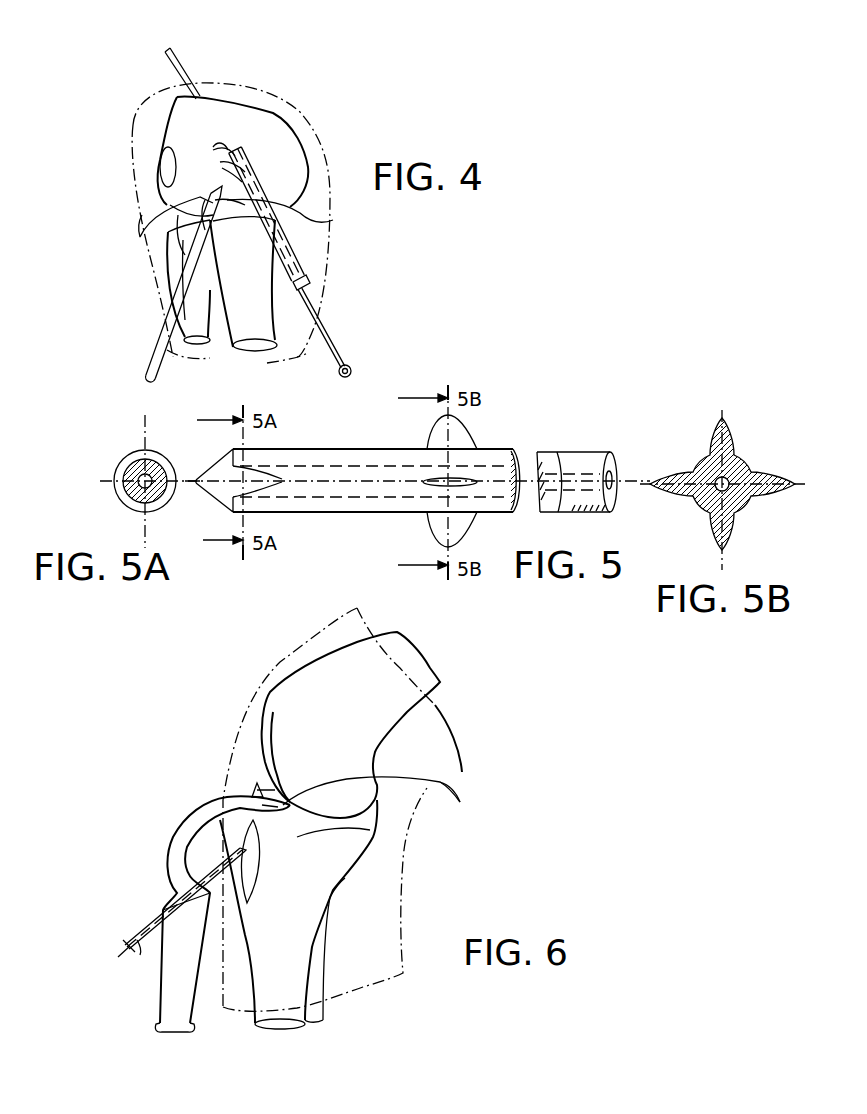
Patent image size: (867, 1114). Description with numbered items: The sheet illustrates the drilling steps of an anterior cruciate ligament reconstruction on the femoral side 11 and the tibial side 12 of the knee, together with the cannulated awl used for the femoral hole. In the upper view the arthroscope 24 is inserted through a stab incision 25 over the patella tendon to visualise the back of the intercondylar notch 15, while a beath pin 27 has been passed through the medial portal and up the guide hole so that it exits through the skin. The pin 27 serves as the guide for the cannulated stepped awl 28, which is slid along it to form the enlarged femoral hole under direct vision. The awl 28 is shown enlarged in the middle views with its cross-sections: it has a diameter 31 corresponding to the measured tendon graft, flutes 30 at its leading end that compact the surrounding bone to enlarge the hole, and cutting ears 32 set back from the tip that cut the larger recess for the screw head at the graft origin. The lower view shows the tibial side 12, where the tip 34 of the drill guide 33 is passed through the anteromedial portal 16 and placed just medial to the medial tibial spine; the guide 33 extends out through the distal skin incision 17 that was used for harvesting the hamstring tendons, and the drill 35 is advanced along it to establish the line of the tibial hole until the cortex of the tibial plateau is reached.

In FIG. 4, the femoral side 11 is at (333, 112).
In FIG. 6, the femoral side 11 is at (462, 707).
In FIG. 4, the tibial side 12 is at (312, 369).
In FIG. 6, the tibial side 12 is at (380, 896).
In FIG. 4, the intercondylar notch 15 is at (227, 150).
In FIG. 4, the anteromedial portal 16 is at (292, 215).
In FIG. 6, the anteromedial portal 16 is at (257, 792).
In FIG. 6, the incision 17 is at (256, 873).
In FIG. 4, the arthroscope 24 is at (157, 352).
In FIG. 4, the stab incision 25 is at (158, 268).
In FIG. 4, the beath pin 27 is at (187, 80).
In FIG. 4, the cannulated stepped awl 28 is at (300, 262).
In FIG. 5, the cannulated stepped awl 28 is at (406, 493).
In FIG. 5A, the flutes 30 is at (165, 495).
In FIG. 5, the flutes 30 is at (250, 513).
In FIG. 4, the diameter 31 is at (352, 368).
In FIG. 5, the cutting ears 32 is at (480, 440).
In FIG. 5B, the cutting ears 32 is at (707, 442).
In FIG. 6, the guide 33 is at (180, 826).
In FIG. 6, the tip 34 is at (433, 780).
In FIG. 6, the drill 35 is at (148, 930).